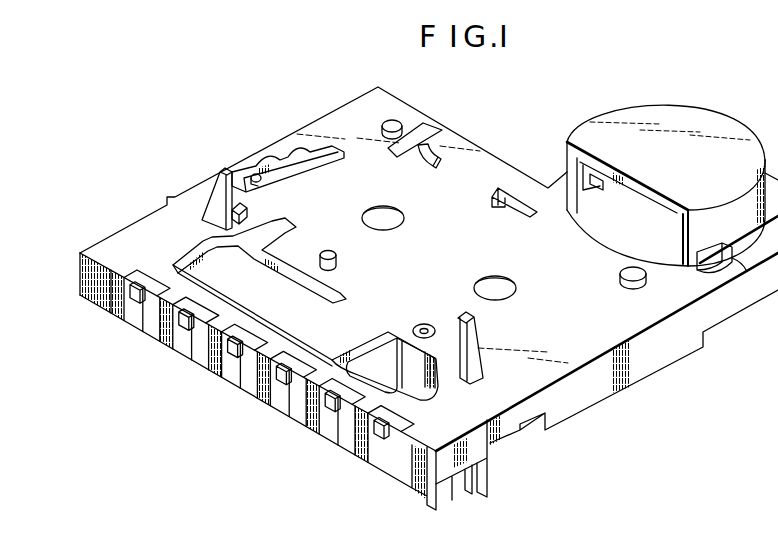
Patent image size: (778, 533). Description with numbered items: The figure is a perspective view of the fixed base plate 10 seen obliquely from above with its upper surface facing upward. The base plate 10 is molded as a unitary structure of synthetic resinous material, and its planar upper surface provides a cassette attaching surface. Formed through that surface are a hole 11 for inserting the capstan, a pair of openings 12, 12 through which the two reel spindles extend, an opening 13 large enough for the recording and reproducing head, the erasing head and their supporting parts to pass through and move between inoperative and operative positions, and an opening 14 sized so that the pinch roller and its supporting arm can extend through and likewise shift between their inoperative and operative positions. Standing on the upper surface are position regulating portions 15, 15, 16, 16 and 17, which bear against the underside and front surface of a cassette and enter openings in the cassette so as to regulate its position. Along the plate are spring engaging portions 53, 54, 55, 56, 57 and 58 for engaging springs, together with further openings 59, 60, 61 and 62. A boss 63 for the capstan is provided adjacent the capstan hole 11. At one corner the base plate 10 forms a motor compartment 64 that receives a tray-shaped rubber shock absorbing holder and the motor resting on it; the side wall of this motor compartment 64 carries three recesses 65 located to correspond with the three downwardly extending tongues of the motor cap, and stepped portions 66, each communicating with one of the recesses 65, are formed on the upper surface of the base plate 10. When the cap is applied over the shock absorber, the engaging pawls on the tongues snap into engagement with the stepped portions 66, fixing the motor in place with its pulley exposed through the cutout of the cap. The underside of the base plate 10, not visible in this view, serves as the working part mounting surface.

The fixed base plate 10 is at (681, 352).
The hole 11 is at (423, 323).
The openings 12 is at (392, 219).
The opening 13 is at (327, 310).
The opening 14 is at (388, 382).
The position regulating portions 15 is at (384, 128).
The position regulating portions 16 is at (214, 205).
The position regulating portion 17 is at (327, 250).
The spring engaging portion 53 is at (378, 439).
The spring engaging portion 54 is at (329, 411).
The spring engaging portion 55 is at (280, 384).
The spring engaging portion 56 is at (231, 357).
The spring engaging portion 57 is at (182, 330).
The spring engaging portion 58 is at (133, 303).
The opening 59 is at (512, 205).
The opening 60 is at (402, 149).
The opening 61 is at (346, 166).
The opening 62 is at (432, 152).
The boss for the capstan 63 is at (412, 366).
The motor compartment 64 is at (656, 240).
The recesses 65 is at (717, 252).
The stepped portions 66 is at (728, 272).